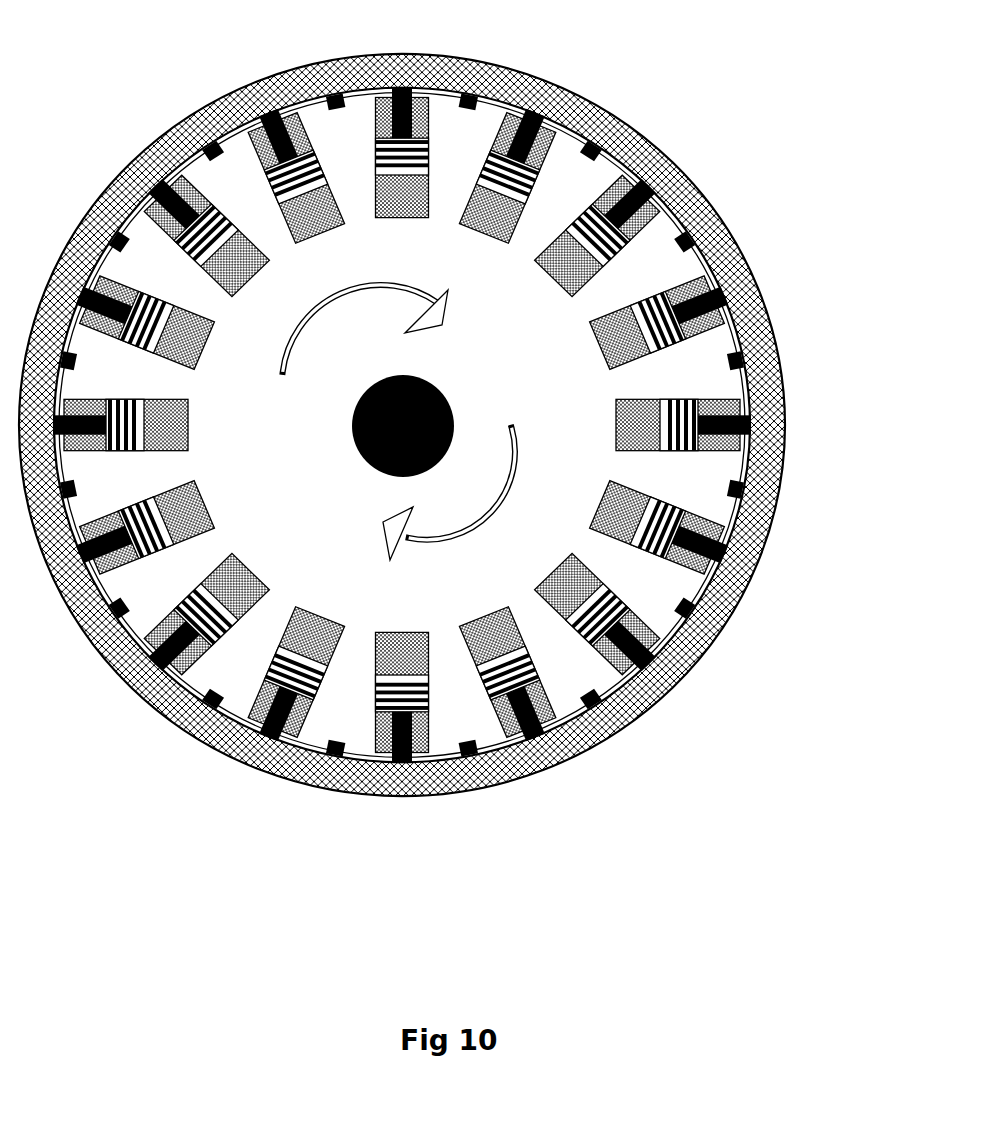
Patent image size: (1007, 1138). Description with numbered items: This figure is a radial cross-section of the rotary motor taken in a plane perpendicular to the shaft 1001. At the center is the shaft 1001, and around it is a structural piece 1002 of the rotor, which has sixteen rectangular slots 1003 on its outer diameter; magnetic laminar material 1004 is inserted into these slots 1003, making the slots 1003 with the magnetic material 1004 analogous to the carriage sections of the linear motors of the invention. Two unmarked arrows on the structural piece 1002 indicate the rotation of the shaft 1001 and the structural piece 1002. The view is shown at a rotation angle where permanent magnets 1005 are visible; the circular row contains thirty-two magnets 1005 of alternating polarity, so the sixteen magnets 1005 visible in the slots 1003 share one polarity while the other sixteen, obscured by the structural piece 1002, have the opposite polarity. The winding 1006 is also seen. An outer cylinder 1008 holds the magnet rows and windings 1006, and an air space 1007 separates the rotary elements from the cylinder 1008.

The shaft 1001 is at (429, 382).
The structural piece 1002 is at (517, 355).
The rectangular slots 1003 is at (663, 640).
The magnetic laminar material 1004 is at (655, 292).
The permanent magnets 1005 is at (762, 426).
The winding 1006 is at (680, 518).
The air space 1007 is at (487, 750).
The cylinder 1008 is at (588, 735).